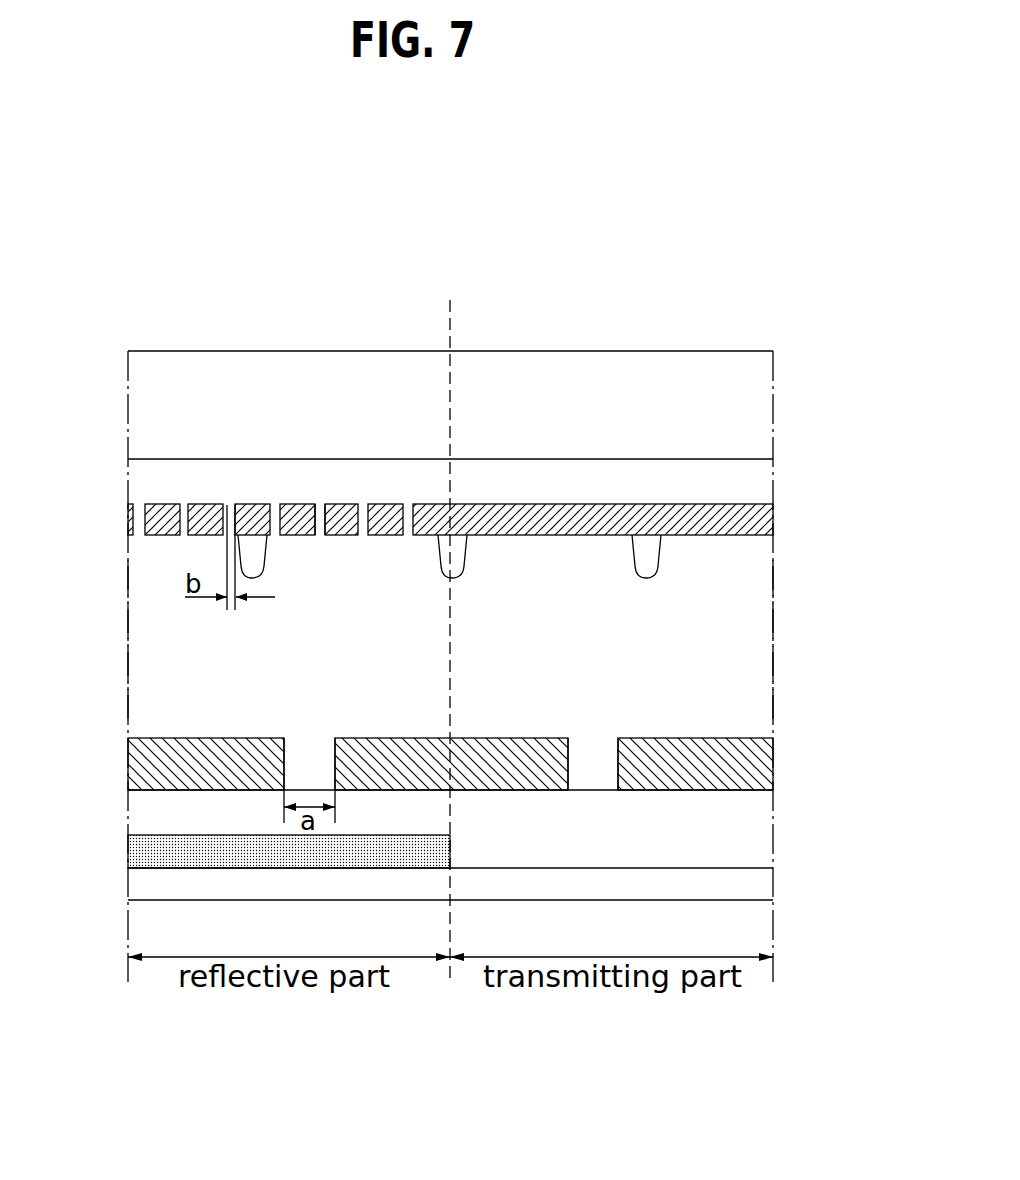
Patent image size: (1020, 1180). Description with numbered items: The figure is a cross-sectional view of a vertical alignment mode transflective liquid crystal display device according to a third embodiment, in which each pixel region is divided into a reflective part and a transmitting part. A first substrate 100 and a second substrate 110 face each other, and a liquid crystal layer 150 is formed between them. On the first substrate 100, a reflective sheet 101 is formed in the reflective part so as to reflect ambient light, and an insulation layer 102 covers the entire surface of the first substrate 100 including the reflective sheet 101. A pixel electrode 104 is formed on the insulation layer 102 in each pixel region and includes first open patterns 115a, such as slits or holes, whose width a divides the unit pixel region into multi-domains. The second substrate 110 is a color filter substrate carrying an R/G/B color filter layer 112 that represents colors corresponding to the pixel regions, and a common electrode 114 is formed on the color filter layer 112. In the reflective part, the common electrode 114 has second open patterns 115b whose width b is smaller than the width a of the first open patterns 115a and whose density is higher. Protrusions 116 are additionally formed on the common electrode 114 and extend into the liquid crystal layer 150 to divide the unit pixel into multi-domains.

The first substrate 100 is at (762, 882).
The reflective sheet 101 is at (140, 852).
The insulation layer 102 is at (762, 827).
The pixel electrode 104 is at (762, 765).
The second substrate 110 is at (762, 402).
The R/G/B color filter layer 112 is at (762, 479).
The common electrode 114 is at (762, 521).
The first open pattern 115a is at (313, 733).
The second open pattern 115b is at (322, 540).
The protrusion 116 is at (652, 558).
The liquid crystal layer 150 is at (762, 627).